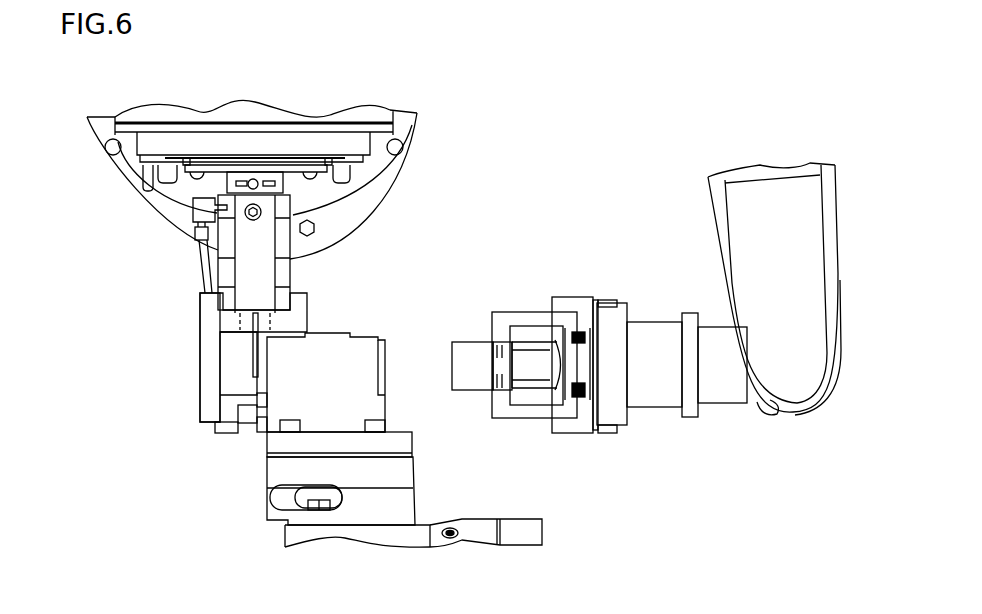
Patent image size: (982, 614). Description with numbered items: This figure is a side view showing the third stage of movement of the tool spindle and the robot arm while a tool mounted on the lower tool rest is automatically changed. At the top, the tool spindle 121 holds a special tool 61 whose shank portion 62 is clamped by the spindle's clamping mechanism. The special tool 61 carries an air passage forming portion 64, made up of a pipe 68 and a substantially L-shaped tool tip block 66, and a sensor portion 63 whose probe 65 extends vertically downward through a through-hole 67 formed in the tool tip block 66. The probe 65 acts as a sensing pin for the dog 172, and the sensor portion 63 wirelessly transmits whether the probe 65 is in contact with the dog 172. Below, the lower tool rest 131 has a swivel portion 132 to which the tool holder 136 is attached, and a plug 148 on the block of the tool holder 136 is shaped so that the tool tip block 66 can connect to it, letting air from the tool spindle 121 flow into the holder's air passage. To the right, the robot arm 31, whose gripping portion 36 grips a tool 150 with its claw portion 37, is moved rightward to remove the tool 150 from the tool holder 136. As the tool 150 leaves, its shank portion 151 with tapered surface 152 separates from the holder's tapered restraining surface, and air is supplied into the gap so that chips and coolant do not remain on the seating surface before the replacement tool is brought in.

The tool spindle 121 is at (350, 104).
The shank portion 62 is at (268, 188).
The sensor portion 63 is at (296, 265).
The through-hole 67 is at (263, 305).
The pipe 68 is at (204, 272).
The air passage forming portion 64 is at (192, 398).
The tool tip block 66 is at (210, 345).
The probe 65 is at (253, 368).
The special tool 61 is at (193, 434).
The plug 148 is at (248, 425).
The dog 172 is at (265, 372).
The tool holder 136 is at (327, 418).
The swivel portion 132 is at (390, 538).
The lower tool rest 131 is at (475, 514).
The tapered surface 152 is at (462, 342).
The shank portion 151 is at (460, 367).
The claw portion 37 is at (533, 413).
The tool 150 is at (530, 355).
The gripping portion 36 is at (580, 300).
The robot arm 31 is at (700, 209).